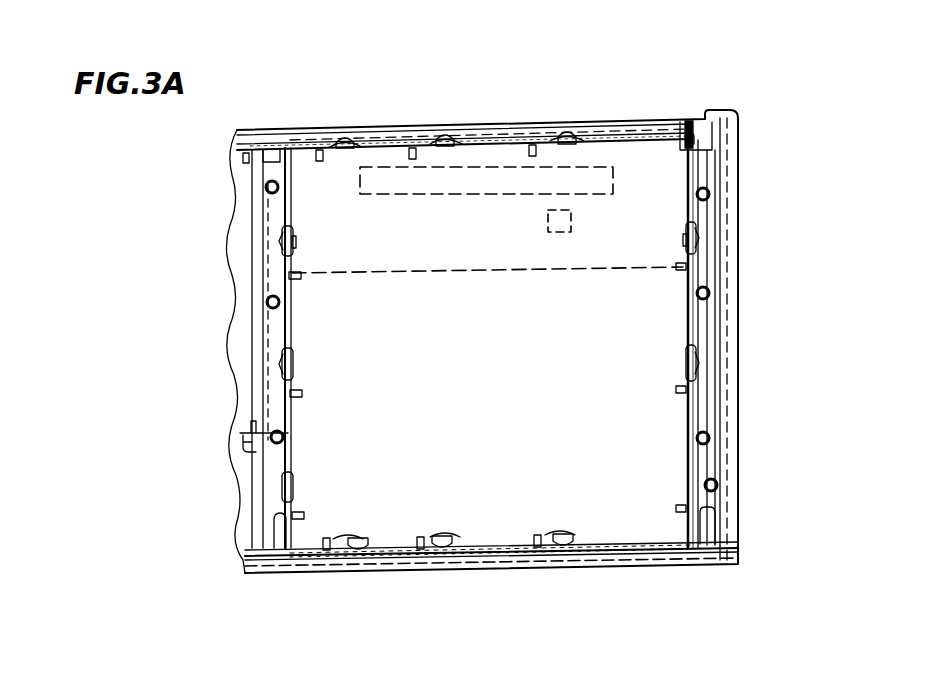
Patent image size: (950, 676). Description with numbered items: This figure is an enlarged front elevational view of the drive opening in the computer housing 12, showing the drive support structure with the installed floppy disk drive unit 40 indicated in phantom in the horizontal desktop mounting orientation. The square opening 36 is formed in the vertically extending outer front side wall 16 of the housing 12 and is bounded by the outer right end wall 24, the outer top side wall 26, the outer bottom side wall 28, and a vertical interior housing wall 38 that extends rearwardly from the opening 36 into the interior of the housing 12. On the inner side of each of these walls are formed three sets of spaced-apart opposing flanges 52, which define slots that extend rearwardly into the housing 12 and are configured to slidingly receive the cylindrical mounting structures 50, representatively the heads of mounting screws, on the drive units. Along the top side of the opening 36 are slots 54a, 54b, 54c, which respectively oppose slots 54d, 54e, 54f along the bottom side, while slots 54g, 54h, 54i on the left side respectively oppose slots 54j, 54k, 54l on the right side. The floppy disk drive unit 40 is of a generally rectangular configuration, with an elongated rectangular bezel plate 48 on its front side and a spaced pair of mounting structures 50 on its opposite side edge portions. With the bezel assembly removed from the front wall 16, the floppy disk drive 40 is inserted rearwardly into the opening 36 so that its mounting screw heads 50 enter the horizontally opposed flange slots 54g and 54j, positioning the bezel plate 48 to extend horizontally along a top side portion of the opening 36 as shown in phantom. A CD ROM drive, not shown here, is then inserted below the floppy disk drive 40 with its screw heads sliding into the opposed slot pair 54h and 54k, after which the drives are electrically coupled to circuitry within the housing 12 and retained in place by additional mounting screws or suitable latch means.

The housing 12 is at (740, 111).
The outer front side wall 16 is at (247, 514).
The outer right end wall 24 is at (738, 402).
The outer top side wall 26 is at (614, 127).
The outer bottom side wall 28 is at (683, 566).
The square opening 36 is at (633, 472).
The vertical interior housing wall 38 is at (288, 352).
The floppy disk drive unit 40 is at (550, 287).
The bezel plate 48 is at (444, 264).
The cylindrical mounting structures 50 is at (294, 241).
The opposing flanges 52 is at (366, 152).
The slot 54a is at (345, 143).
The slot 54b is at (445, 140).
The slot 54c is at (567, 137).
The slot 54d is at (358, 566).
The slot 54e is at (442, 560).
The slot 54f is at (563, 557).
The slot 54g is at (283, 242).
The slot 54h is at (287, 364).
The slot 54i is at (288, 487).
The slot 54j is at (700, 240).
The slot 54k is at (700, 358).
The slot 54l is at (718, 480).